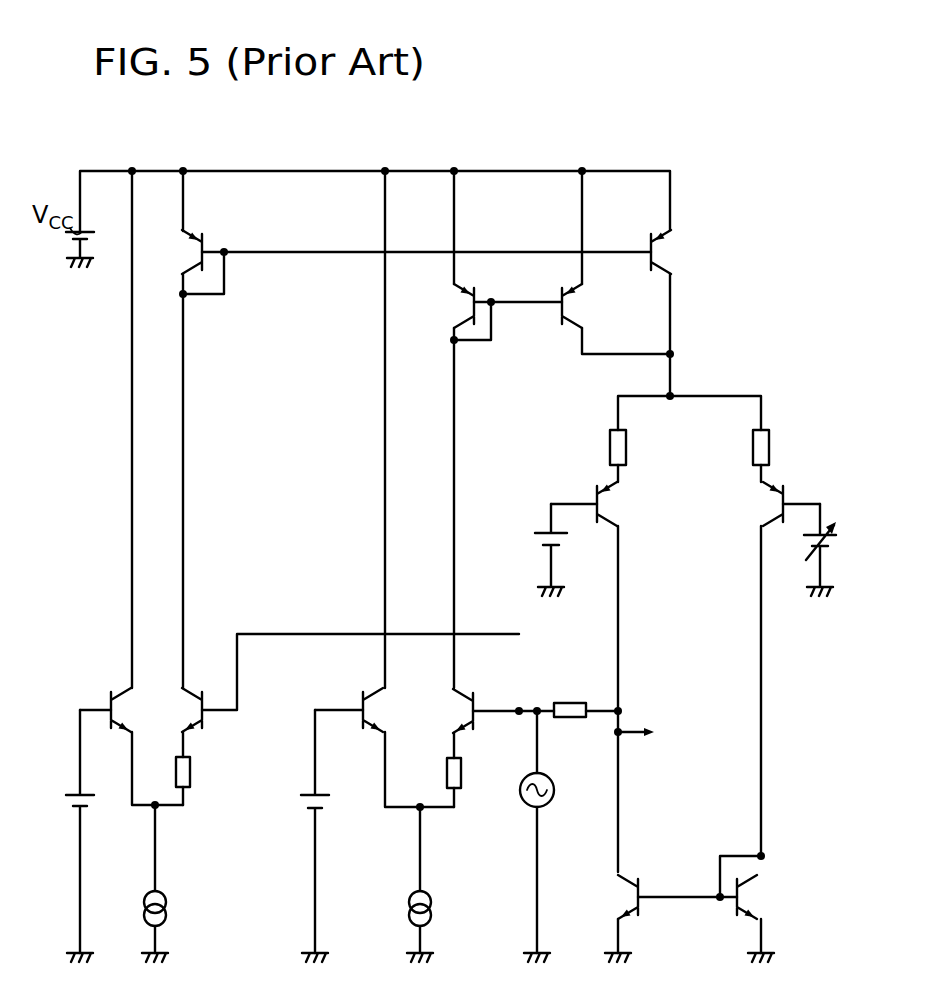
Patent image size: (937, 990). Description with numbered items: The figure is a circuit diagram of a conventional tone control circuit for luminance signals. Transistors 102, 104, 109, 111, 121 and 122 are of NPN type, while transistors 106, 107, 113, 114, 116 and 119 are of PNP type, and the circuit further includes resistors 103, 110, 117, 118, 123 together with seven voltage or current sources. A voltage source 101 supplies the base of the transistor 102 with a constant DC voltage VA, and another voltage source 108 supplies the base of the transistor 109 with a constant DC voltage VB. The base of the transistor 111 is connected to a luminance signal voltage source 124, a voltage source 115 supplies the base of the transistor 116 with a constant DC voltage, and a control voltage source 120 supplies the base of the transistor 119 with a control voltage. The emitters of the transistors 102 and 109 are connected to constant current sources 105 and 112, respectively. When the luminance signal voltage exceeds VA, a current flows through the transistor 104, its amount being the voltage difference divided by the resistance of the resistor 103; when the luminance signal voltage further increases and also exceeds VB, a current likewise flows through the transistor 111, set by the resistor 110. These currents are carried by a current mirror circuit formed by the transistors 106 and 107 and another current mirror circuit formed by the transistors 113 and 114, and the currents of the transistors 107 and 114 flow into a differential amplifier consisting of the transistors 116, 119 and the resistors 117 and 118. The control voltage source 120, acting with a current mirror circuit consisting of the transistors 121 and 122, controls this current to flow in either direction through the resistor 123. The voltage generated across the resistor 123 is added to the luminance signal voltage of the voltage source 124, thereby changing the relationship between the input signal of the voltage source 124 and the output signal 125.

The voltage source 101 is at (88, 812).
The transistor 102 is at (110, 698).
The resistor 103 is at (191, 773).
The transistor 104 is at (206, 698).
The constant current source 105 is at (166, 897).
The transistor 106 is at (196, 251).
The transistor 107 is at (656, 256).
The voltage source 108 is at (309, 814).
The transistor 109 is at (360, 702).
The resistor 110 is at (462, 773).
The transistor 111 is at (488, 684).
The constant current source 112 is at (431, 897).
The transistor 113 is at (468, 310).
The transistor 114 is at (568, 310).
The voltage source 115 is at (545, 530).
The transistor 116 is at (602, 508).
The resistor 117 is at (627, 452).
The resistor 118 is at (770, 450).
The transistor 119 is at (778, 505).
The control voltage source 120 is at (830, 524).
The transistor 121 is at (742, 897).
The transistor 122 is at (630, 896).
The resistor 123 is at (570, 701).
The luminance signal voltage source 124 is at (548, 804).
The output signal 125 is at (641, 728).